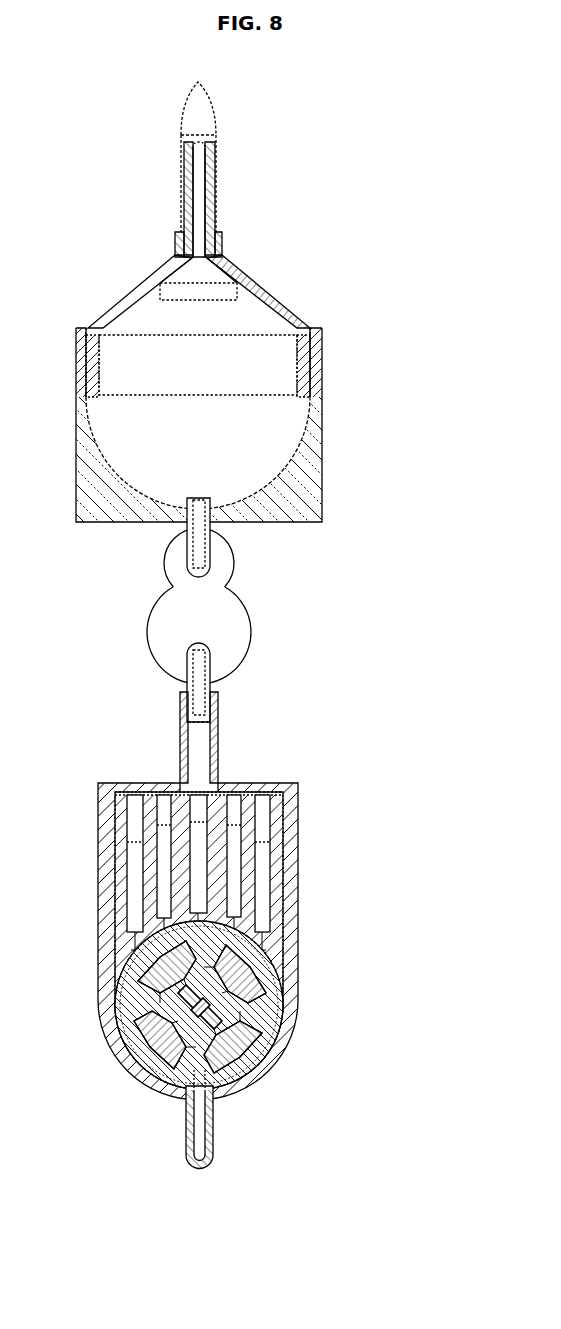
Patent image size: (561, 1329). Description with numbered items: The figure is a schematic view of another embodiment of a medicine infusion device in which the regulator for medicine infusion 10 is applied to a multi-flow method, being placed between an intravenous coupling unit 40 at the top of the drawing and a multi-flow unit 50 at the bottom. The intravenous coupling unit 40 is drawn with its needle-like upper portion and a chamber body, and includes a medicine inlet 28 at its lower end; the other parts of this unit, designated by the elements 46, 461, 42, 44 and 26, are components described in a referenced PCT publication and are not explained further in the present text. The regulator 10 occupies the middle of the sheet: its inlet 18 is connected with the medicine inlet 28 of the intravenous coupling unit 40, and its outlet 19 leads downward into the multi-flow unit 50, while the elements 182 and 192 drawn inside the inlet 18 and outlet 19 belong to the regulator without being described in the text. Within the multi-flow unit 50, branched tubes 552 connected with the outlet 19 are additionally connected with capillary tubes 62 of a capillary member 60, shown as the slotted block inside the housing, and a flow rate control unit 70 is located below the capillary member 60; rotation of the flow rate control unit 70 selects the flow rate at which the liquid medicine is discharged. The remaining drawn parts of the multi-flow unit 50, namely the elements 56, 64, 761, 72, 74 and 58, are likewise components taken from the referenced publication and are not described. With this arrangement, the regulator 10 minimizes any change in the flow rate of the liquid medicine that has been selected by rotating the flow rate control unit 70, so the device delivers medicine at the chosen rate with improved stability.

The intravenous coupling unit 40 is at (438, 75).
The needle 46 is at (228, 169).
The needle bore 461 is at (203, 215).
The support arms 42 is at (138, 288).
The housing wall 44 is at (80, 367).
The chamber 26 is at (268, 423).
The regulator for medicine infusion 10 is at (439, 490).
The medicine inlet 28 is at (179, 488).
The inlet 18 is at (244, 544).
The upper tube insert 182 is at (198, 548).
The lower tube insert 192 is at (198, 663).
The multi-flow unit 50 is at (439, 1185).
The outlet 19 is at (188, 727).
The pump housing 56 is at (280, 920).
The branched tubes 552 is at (257, 783).
The capillary member 60 is at (280, 942).
The capillary tubes 62 is at (135, 902).
The pins 64 is at (130, 942).
The flow rate control unit 70 is at (207, 1005).
The rotor hub 761 is at (260, 1003).
The rotor blades 72 is at (282, 1018).
The blade links 74 is at (365, 990).
The outlet tube 58 is at (210, 1125).